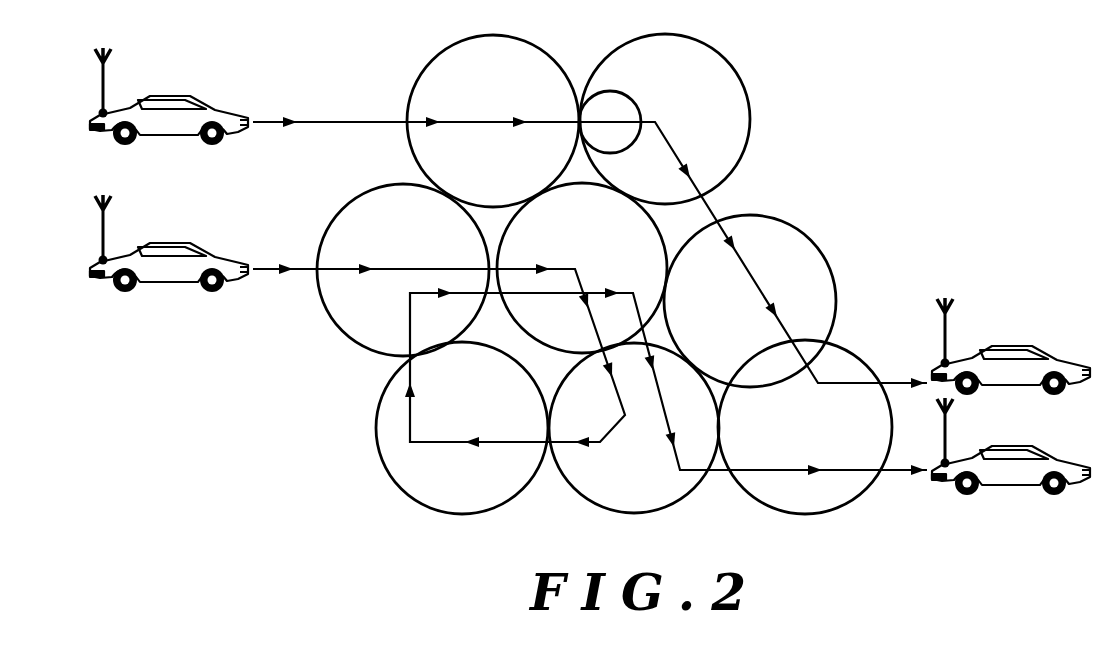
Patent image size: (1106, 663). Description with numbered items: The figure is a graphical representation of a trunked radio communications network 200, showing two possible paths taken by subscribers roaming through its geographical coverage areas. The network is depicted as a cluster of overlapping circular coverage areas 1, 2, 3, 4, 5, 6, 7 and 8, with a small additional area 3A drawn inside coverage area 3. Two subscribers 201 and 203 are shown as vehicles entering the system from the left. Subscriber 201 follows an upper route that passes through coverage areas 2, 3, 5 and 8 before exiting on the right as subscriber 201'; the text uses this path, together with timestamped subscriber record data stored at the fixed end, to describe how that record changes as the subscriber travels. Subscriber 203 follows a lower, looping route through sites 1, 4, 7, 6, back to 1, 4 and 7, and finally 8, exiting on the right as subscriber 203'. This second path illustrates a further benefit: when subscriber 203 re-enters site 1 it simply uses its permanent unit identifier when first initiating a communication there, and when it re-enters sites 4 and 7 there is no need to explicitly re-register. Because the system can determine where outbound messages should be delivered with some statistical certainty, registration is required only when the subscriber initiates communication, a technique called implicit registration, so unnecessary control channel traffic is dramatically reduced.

The trunked radio communications network 200 is at (925, 231).
The coverage area 1 is at (403, 270).
The coverage area 2 is at (493, 121).
The coverage area 3 is at (665, 119).
The microcell 3A is at (610, 122).
The coverage area 4 is at (582, 268).
The coverage area 5 is at (750, 301).
The coverage area 6 is at (462, 428).
The coverage area 7 is at (634, 428).
The coverage area 8 is at (805, 427).
The subscriber 201 is at (169, 96).
The subscriber 203 is at (169, 243).
The first mobile vehicle unit at later position 201' is at (1011, 339).
The second mobile vehicle unit at later position 203' is at (1011, 489).